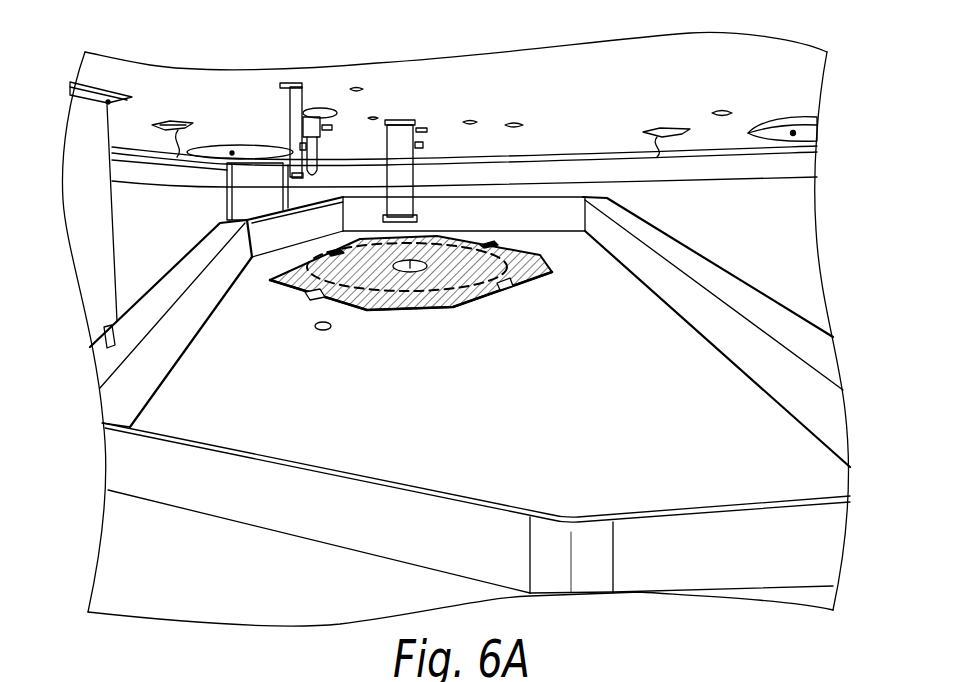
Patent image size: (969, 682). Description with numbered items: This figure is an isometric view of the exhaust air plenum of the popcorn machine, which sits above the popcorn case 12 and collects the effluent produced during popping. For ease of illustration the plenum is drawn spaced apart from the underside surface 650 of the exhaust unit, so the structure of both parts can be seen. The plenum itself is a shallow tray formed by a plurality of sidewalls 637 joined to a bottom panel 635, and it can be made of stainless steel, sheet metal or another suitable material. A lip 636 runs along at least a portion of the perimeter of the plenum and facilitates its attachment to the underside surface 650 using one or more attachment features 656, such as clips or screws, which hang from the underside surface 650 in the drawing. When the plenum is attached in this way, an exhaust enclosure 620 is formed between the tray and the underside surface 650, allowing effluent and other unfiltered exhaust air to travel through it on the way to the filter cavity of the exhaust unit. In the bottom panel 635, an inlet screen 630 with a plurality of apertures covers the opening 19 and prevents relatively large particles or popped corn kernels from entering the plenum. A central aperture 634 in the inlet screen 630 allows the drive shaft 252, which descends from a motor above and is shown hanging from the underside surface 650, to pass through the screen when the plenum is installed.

The popcorn case 12 is at (245, 482).
The opening 19 is at (437, 310).
The drive shaft 252 is at (413, 177).
The exhaust enclosure 620 is at (598, 358).
The inlet screen 630 is at (492, 293).
The aperture 634 is at (410, 268).
The bottom panel 635 is at (380, 404).
The lip 636 is at (798, 332).
The sidewalls 637 is at (645, 262).
The underside surface 650 is at (240, 103).
The attachment features 656 is at (177, 120).